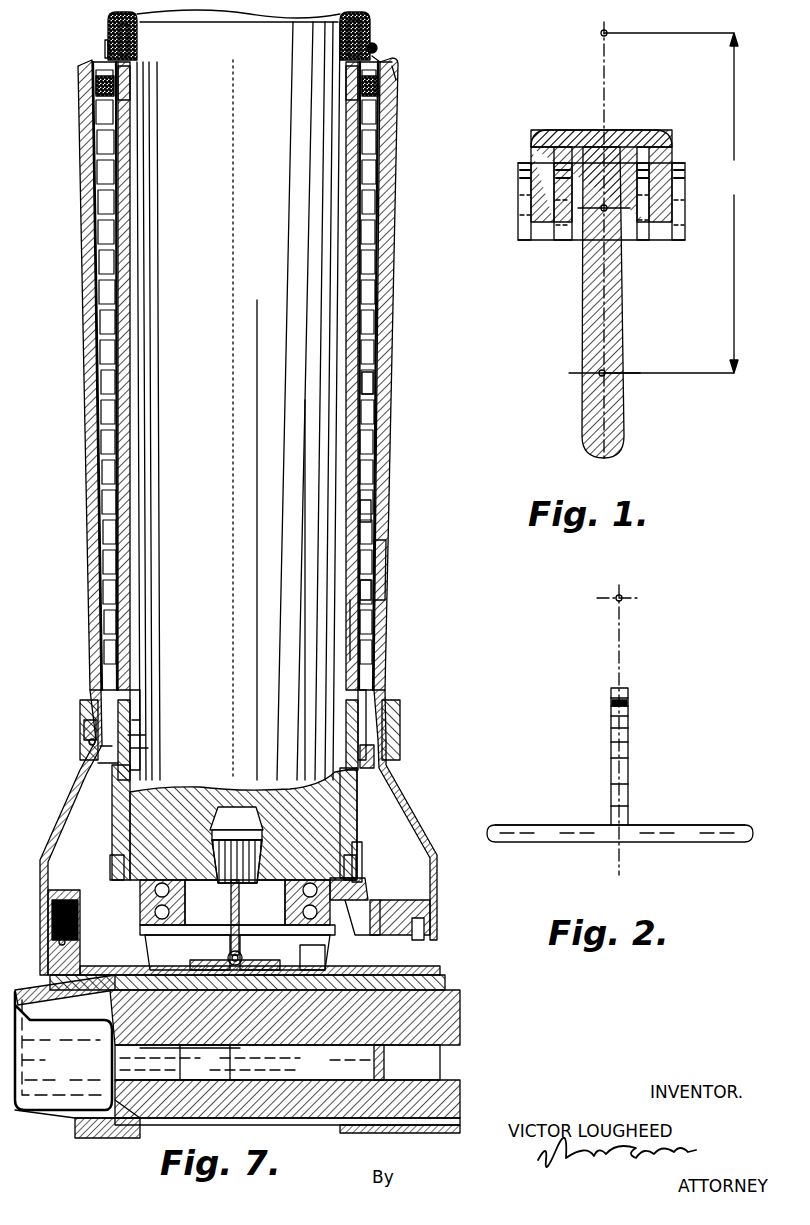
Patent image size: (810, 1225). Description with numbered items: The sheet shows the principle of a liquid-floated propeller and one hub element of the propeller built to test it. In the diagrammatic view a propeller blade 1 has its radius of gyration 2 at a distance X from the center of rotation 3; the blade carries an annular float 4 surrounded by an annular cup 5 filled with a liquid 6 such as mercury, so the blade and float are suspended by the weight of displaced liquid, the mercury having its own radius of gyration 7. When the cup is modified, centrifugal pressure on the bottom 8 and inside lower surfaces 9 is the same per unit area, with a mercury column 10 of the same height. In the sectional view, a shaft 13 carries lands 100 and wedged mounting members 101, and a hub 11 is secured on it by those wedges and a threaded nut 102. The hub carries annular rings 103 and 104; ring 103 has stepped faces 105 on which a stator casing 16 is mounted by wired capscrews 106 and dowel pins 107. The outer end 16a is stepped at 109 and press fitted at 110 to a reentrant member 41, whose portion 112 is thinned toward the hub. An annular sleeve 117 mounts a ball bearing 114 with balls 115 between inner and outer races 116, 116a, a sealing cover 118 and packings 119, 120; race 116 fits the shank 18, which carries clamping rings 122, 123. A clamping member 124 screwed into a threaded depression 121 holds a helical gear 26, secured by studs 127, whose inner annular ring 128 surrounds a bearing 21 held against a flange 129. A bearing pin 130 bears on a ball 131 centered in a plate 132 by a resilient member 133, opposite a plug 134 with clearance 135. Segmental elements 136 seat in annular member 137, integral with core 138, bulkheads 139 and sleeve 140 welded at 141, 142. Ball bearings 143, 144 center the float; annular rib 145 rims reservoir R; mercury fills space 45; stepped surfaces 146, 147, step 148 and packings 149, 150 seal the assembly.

In FIG. 1, the propeller blade 1 is at (618, 414).
In FIG. 1, the radius of gyration of the blade 2 is at (600, 371).
In FIG. 1, the center of rotation 3 is at (602, 36).
In FIG. 2, the center of rotation 3 is at (617, 603).
In FIG. 1, the annular float 4 is at (672, 150).
In FIG. 1, the annular cup 5 is at (530, 242).
In FIG. 1, the liquid 6 is at (518, 201).
In FIG. 7, the radius of gyration of the mercury 7 is at (370, 510).
In FIG. 1, the radius of gyration of the mercury 7 is at (610, 218).
In FIG. 2, the bottom 8 is at (548, 842).
In FIG. 2, the inside lower surfaces 9 is at (553, 824).
In FIG. 2, the mercury column 10 is at (630, 736).
In FIG. 1, the distance from center of rotation X is at (671, 203).
In FIG. 7, the hub 11 is at (430, 960).
In FIG. 7, the shaft 13 is at (438, 1004).
In FIG. 7, the stator casing 16 is at (386, 446).
In FIG. 7, the outer end of stator casing 16a is at (396, 72).
In FIG. 7, the shank 18 is at (221, 420).
In FIG. 7, the bearing 21 is at (307, 958).
In FIG. 7, the helical gear 26 is at (362, 857).
In FIG. 7, the reentrant member 41 is at (340, 68).
In FIG. 7, the annular space 45 is at (132, 306).
In FIG. 7, the reservoir R is at (150, 688).
In FIG. 7, the lands 100 is at (280, 1128).
In FIG. 7, the wedged mounting members 101 is at (140, 1128).
In FIG. 7, the threaded nut 102 is at (105, 1038).
In FIG. 7, the annular ring 103 is at (420, 945).
In FIG. 7, the annular ring 104 is at (350, 898).
In FIG. 7, the stepped faces 105 is at (420, 928).
In FIG. 7, the wired capscrews 106 is at (68, 902).
In FIG. 7, the dowel pins 107 is at (435, 903).
In FIG. 7, the stepped inner diameter 109 is at (385, 58).
In FIG. 7, the press fit 110 is at (376, 54).
In FIG. 7, the thinned portion of reentrant member 112 is at (350, 623).
In FIG. 7, the ball bearing 114 is at (138, 31).
In FIG. 7, the balls 115 is at (344, 48).
In FIG. 7, the inner race 116 is at (138, 53).
In FIG. 7, the outer race 116a is at (118, 24).
In FIG. 7, the annular sleeve 117 is at (368, 20).
In FIG. 7, the sealing cover 118 is at (108, 34).
In FIG. 7, the packing 119 is at (108, 50).
In FIG. 7, the packing 120 is at (285, 76).
In FIG. 7, the screw threaded depression 121 is at (236, 845).
In FIG. 7, the annular clamping ring 122 is at (145, 795).
In FIG. 7, the annular clamping ring 123 is at (152, 808).
In FIG. 7, the clamping member 124 is at (270, 858).
In FIG. 7, the studs 127 is at (120, 846).
In FIG. 7, the inner annular ring 128 is at (285, 950).
In FIG. 7, the flange 129 is at (237, 937).
In FIG. 7, the bearing pin 130 is at (180, 915).
In FIG. 7, the ball 131 is at (257, 922).
In FIG. 7, the plate 132 is at (235, 955).
In FIG. 7, the resilient member 133 is at (187, 953).
In FIG. 7, the plug 134 is at (250, 1030).
In FIG. 7, the clearance 135 is at (232, 1050).
In FIG. 7, the segmental elements 136 is at (160, 750).
In FIG. 7, the annular member 137 is at (372, 758).
In FIG. 7, the internal core 138 is at (366, 586).
In FIG. 7, the bulkheads 139 is at (378, 393).
In FIG. 7, the sleeve 140 is at (384, 566).
In FIG. 7, the weld point 141 is at (128, 98).
In FIG. 7, the weld point 142 is at (82, 706).
In FIG. 7, the ball bearings 143 is at (98, 82).
In FIG. 7, the bearing balls 144 is at (140, 733).
In FIG. 7, the annular rib 145 is at (148, 738).
In FIG. 7, the stepped surface 146 is at (110, 768).
In FIG. 7, the stepped surface 147 is at (100, 750).
In FIG. 7, the step 148 is at (84, 726).
In FIG. 7, the packing element 149 is at (150, 750).
In FIG. 7, the packing 150 is at (90, 741).